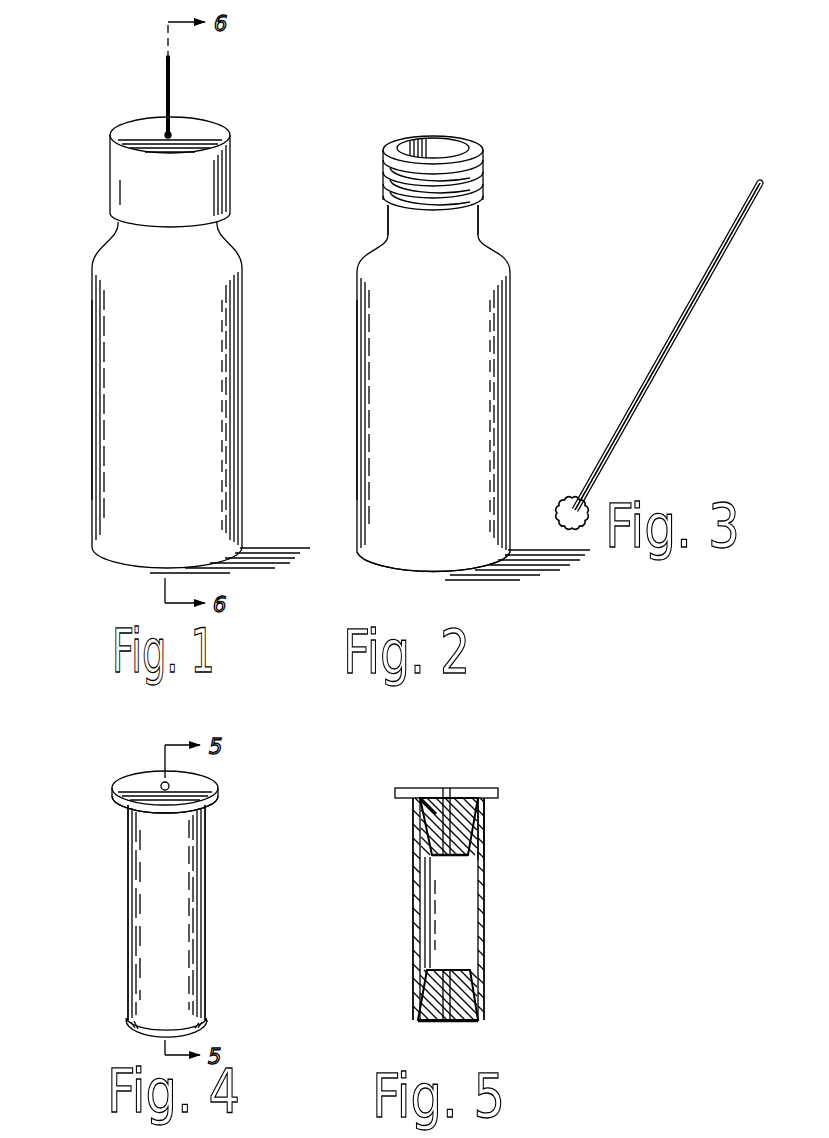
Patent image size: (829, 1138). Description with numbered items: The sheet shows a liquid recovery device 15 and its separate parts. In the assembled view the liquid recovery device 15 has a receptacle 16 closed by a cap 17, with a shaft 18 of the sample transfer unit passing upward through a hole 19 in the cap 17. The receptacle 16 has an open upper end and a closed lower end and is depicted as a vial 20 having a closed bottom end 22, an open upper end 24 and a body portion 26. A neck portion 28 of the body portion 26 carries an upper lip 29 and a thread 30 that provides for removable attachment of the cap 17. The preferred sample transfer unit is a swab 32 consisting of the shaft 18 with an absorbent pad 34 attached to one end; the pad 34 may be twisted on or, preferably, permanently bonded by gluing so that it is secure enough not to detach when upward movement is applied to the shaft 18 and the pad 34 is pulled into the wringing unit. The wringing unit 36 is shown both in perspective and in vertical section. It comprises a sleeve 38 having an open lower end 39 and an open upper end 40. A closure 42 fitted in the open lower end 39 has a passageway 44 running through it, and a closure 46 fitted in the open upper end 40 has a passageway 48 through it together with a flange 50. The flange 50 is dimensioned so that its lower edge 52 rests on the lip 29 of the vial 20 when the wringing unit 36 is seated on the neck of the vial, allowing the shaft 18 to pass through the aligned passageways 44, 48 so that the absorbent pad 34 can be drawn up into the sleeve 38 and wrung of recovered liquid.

In FIG. 1, the liquid recovery device 15 is at (244, 352).
In FIG. 1, the receptacle 16 is at (92, 337).
In FIG. 1, the cap 17 is at (232, 162).
In FIG. 1, the shaft 18 is at (170, 72).
In FIG. 3, the shaft 18 is at (692, 300).
In FIG. 1, the hole 19 is at (164, 133).
In FIG. 2, the vial 20 is at (535, 360).
In FIG. 2, the closed bottom end 22 is at (475, 576).
In FIG. 2, the open upper end 24 is at (415, 138).
In FIG. 2, the body portion 26 is at (370, 380).
In FIG. 2, the neck portion 28 is at (465, 227).
In FIG. 2, the upper lip 29 is at (470, 150).
In FIG. 5, the upper lip 29 is at (485, 814).
In FIG. 2, the thread 30 is at (385, 173).
In FIG. 3, the swab 32 is at (678, 364).
In FIG. 3, the absorbent pad 34 is at (566, 499).
In FIG. 4, the wringing unit 36 is at (220, 860).
In FIG. 5, the wringing unit 36 is at (537, 927).
In FIG. 4, the sleeve 38 is at (200, 923).
In FIG. 5, the sleeve 38 is at (485, 903).
In FIG. 5, the open lower end 39 is at (462, 950).
In FIG. 5, the open upper end 40 is at (470, 855).
In FIG. 4, the closure 42 is at (197, 1028).
In FIG. 5, the closure 42 is at (428, 992).
In FIG. 5, the passageway 44 is at (447, 1023).
In FIG. 4, the closure 46 is at (205, 780).
In FIG. 5, the closure 46 is at (424, 832).
In FIG. 4, the passageway 48 is at (163, 783).
In FIG. 5, the passageway 48 is at (449, 792).
In FIG. 4, the flange 50 is at (216, 791).
In FIG. 5, the flange 50 is at (498, 795).
In FIG. 5, the lower edge 52 is at (418, 797).